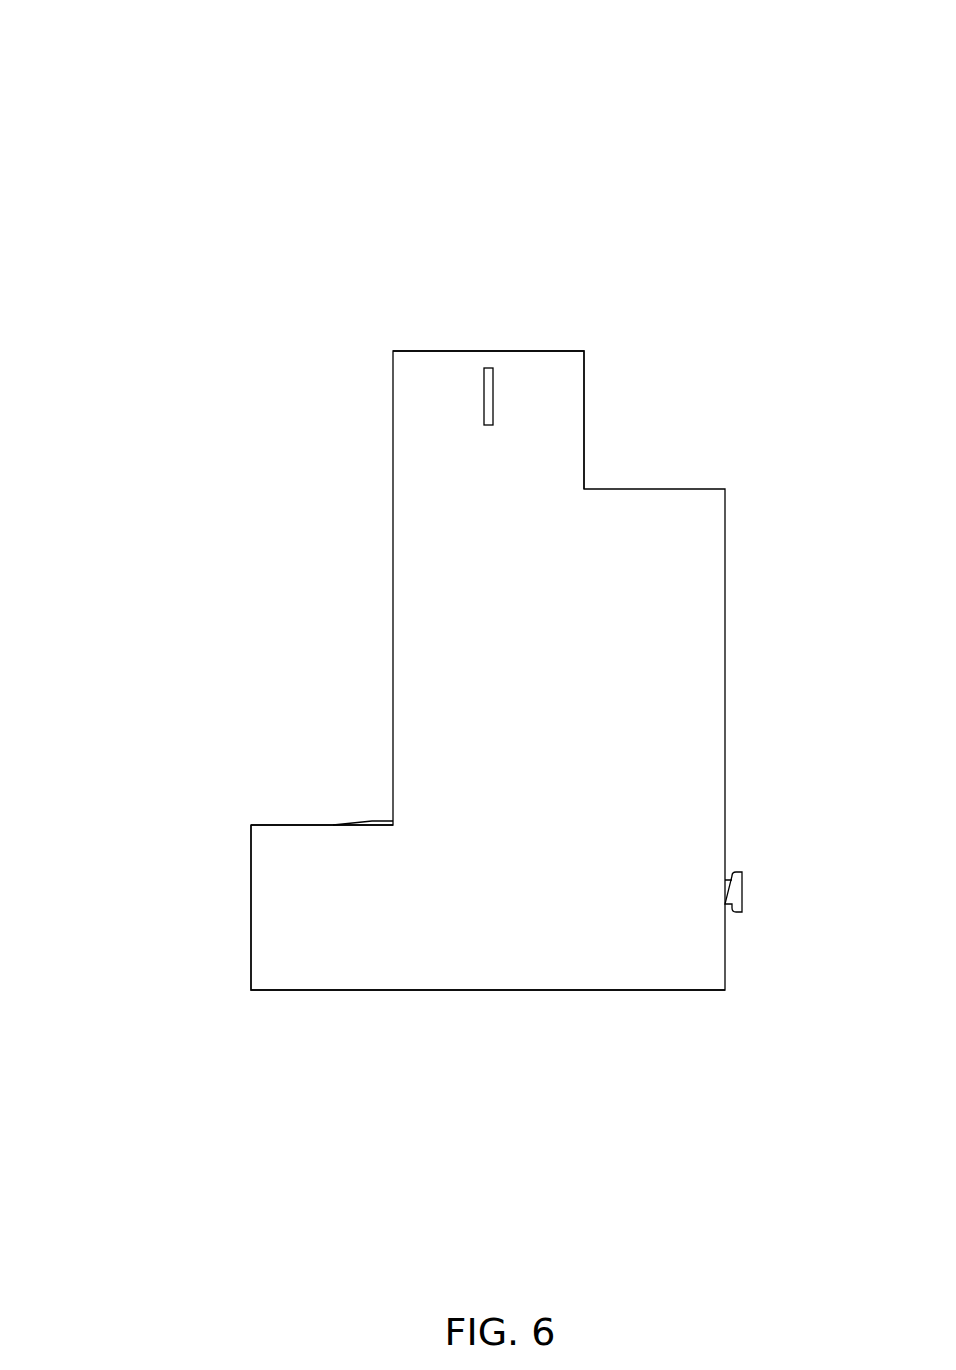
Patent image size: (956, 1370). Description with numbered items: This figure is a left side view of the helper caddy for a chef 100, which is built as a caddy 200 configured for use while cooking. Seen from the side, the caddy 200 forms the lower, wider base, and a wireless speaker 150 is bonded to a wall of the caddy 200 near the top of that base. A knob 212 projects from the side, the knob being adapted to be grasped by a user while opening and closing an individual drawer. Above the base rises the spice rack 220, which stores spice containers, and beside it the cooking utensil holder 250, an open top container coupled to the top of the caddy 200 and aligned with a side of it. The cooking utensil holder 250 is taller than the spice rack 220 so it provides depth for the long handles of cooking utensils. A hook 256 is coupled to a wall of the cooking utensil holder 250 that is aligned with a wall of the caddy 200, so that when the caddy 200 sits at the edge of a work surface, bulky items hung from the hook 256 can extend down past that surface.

The helper caddy for a chef 100 is at (123, 180).
The wireless speaker 150 is at (370, 822).
The caddy 200 is at (251, 863).
The knob 212 is at (739, 892).
The spice rack 220 is at (725, 533).
The cooking utensil holder 250 is at (463, 396).
The hook 256 is at (490, 392).